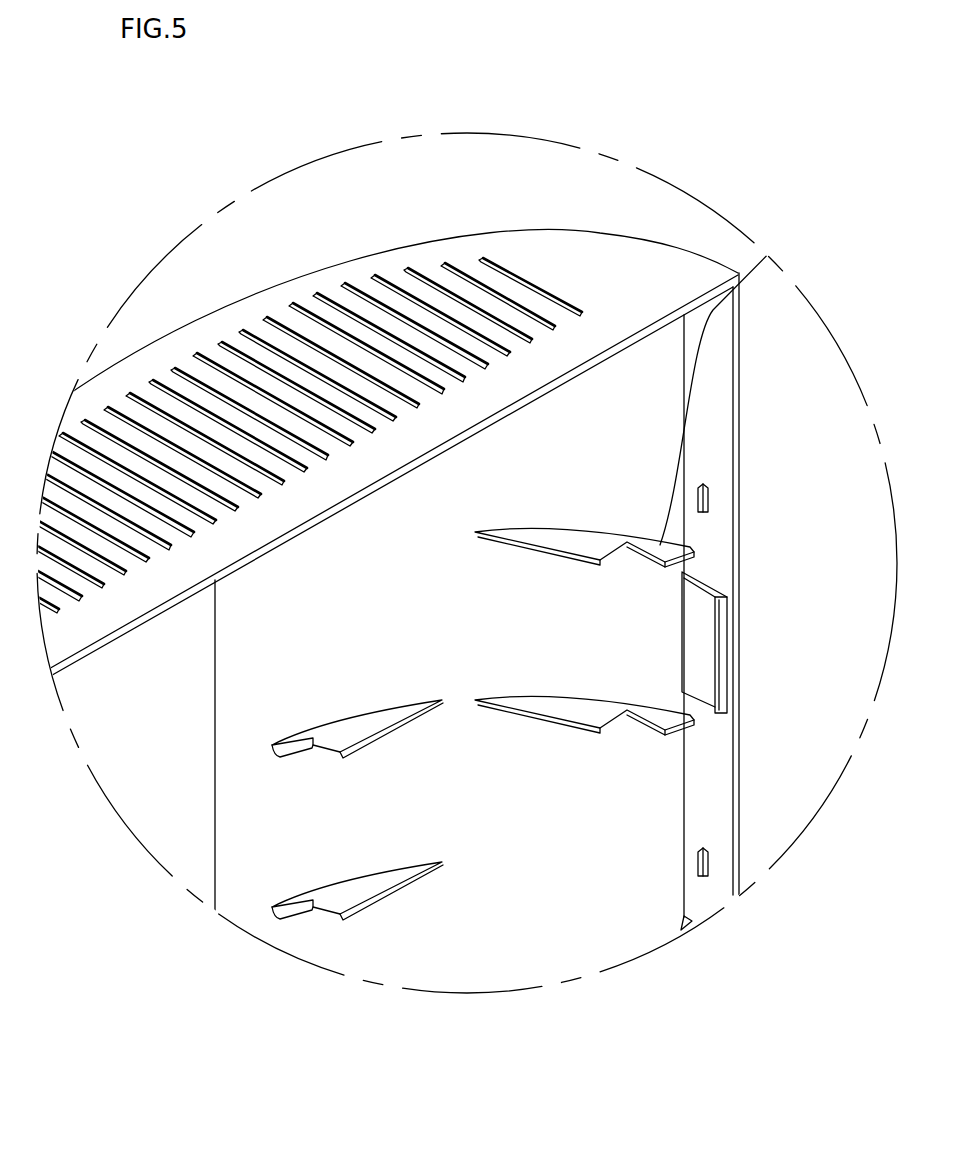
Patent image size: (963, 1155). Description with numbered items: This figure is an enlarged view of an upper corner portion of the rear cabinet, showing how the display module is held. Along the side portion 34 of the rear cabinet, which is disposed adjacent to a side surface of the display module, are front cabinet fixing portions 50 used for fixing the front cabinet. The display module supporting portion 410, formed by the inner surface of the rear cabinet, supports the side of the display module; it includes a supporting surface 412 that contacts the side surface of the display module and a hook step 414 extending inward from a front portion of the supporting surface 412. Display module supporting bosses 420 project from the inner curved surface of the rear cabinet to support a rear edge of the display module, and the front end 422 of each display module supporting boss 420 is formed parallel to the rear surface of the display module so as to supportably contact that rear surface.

The side portion 34 is at (713, 403).
The front cabinet fixing portion 50 is at (708, 504).
The display module supporting portion 410 is at (770, 624).
The supporting surface 412 is at (702, 597).
The hook step 414 is at (733, 662).
The display module supporting boss 420 is at (583, 543).
The front end 422 is at (745, 374).